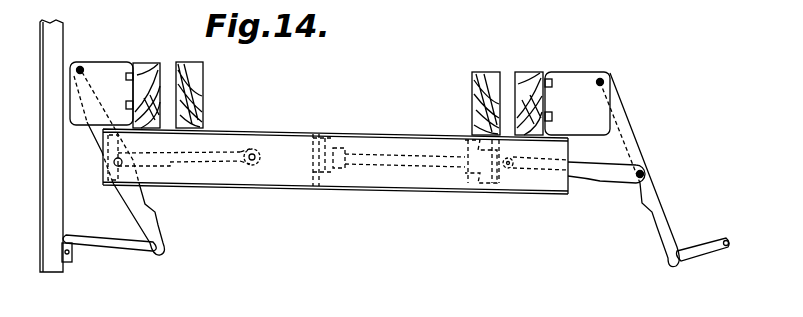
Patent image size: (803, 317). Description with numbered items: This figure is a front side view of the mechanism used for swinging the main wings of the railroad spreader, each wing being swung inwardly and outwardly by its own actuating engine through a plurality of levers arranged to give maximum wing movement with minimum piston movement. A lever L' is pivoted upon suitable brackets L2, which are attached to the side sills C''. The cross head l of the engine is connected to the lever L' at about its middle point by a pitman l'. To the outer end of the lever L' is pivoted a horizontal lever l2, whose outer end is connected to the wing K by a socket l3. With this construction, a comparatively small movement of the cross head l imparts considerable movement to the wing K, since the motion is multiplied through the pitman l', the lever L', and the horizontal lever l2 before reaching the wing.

The wing K is at (43, 167).
The brackets L2 is at (110, 73).
The side sills C'' is at (338, 98).
The lever L' is at (372, 169).
The pitman l' is at (376, 143).
The cross head l is at (516, 180).
The horizontal lever l2 is at (107, 241).
The socket l3 is at (72, 262).